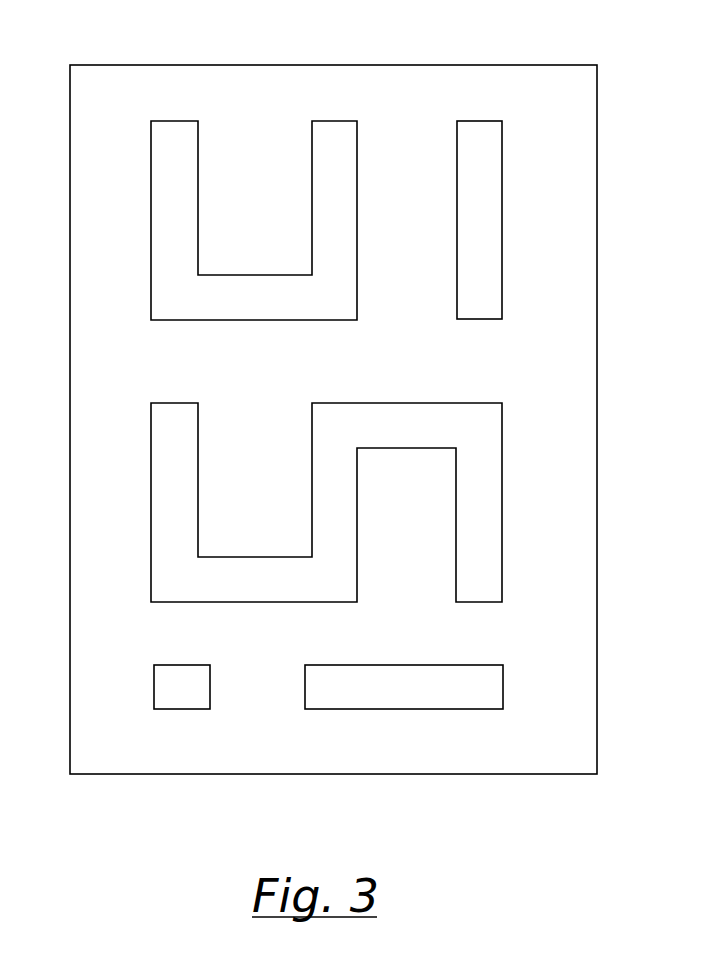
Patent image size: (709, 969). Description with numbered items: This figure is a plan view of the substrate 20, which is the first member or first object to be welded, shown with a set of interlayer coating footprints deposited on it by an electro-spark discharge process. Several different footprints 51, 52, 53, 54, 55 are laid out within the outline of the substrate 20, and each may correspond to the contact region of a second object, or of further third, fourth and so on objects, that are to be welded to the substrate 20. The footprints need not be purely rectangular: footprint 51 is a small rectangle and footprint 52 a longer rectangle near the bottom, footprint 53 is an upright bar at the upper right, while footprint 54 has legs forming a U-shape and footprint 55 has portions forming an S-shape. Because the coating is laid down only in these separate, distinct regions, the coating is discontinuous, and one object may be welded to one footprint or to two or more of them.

The substrate 20 is at (552, 737).
The footprint 51 is at (188, 698).
The footprint 52 is at (479, 682).
The footprint 53 is at (487, 178).
The U-shaped footprint 54 is at (337, 135).
The S-shaped footprint 55 is at (491, 506).